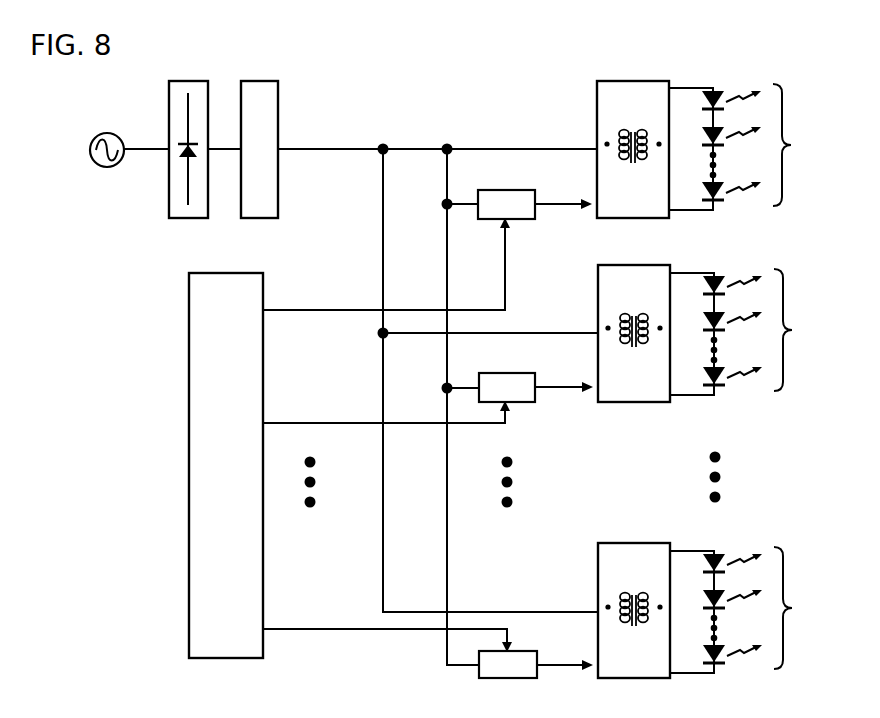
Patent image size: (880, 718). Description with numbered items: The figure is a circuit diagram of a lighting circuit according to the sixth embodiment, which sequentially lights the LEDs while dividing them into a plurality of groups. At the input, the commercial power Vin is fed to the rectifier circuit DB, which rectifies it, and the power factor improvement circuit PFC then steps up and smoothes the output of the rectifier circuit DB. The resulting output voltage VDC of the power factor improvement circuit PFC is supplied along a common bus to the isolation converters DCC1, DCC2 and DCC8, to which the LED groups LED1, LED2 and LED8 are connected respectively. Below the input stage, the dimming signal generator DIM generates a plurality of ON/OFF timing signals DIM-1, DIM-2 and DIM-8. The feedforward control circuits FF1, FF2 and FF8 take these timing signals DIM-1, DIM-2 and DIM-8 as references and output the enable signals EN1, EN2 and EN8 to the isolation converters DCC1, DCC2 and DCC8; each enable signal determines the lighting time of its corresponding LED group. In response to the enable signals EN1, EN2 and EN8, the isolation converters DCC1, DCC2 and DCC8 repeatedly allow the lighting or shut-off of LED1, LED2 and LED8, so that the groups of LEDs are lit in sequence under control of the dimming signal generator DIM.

The commercial power Vin is at (111, 150).
The rectifier circuit DB is at (205, 139).
The power factor improvement circuit PFC is at (419, 139).
The output voltage VDC is at (478, 393).
The dimming signal generator DIM is at (226, 453).
The timing signal DIM-1 is at (386, 264).
The timing signal DIM-2 is at (386, 412).
The timing signal DIM-8 is at (387, 632).
The feedforward control circuit FF1 is at (506, 204).
The feedforward control circuit FF2 is at (507, 387).
The feedforward control circuit FF8 is at (508, 664).
The enable signal EN1 is at (563, 195).
The enable signal EN2 is at (564, 378).
The enable signal EN8 is at (565, 656).
The isolation converter DCC1 is at (633, 140).
The isolation converter DCC2 is at (634, 323).
The isolation converter DCC8 is at (634, 601).
The LED LED1 is at (754, 147).
The LED LED2 is at (756, 332).
The LED LED8 is at (756, 610).